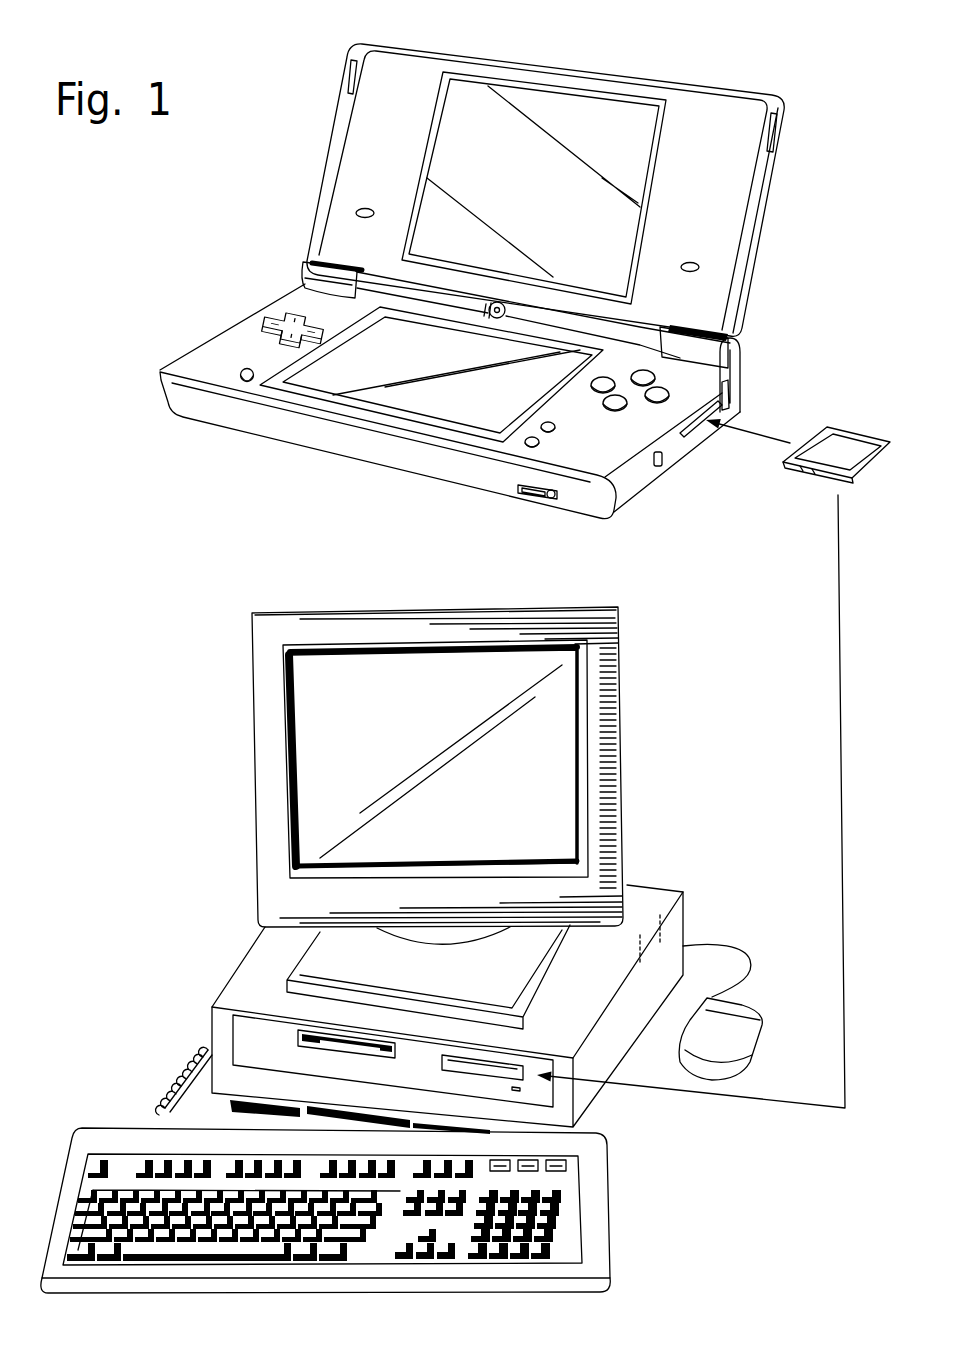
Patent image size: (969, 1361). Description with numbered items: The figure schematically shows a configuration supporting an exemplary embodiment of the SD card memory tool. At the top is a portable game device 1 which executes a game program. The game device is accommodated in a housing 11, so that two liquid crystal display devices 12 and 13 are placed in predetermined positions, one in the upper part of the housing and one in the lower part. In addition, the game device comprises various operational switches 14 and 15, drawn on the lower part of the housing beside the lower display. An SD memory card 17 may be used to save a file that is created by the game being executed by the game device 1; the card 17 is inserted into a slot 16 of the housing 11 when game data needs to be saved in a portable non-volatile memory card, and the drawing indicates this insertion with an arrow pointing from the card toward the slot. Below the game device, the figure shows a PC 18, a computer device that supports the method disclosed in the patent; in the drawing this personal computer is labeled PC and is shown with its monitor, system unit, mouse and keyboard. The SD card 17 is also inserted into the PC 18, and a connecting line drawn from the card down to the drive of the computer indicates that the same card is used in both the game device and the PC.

The portable game device 1 is at (521, 291).
The housing 11 is at (730, 358).
The liquid crystal display device 12 is at (660, 135).
The liquid crystal display device 13 is at (450, 423).
The operational switch 14 is at (293, 322).
The operational switch 15 is at (637, 403).
The slot 16 is at (718, 413).
The SD memory card 17 is at (862, 447).
The PC 18 is at (597, 1220).
The element PC is at (317, 768).